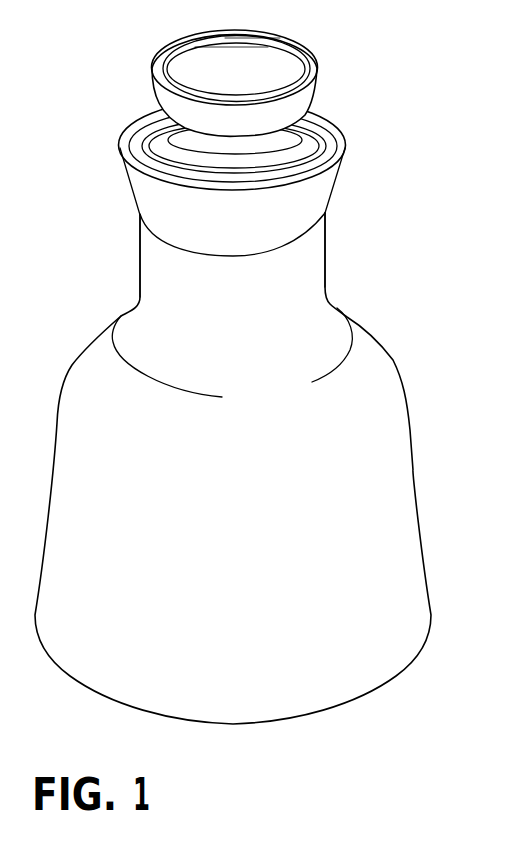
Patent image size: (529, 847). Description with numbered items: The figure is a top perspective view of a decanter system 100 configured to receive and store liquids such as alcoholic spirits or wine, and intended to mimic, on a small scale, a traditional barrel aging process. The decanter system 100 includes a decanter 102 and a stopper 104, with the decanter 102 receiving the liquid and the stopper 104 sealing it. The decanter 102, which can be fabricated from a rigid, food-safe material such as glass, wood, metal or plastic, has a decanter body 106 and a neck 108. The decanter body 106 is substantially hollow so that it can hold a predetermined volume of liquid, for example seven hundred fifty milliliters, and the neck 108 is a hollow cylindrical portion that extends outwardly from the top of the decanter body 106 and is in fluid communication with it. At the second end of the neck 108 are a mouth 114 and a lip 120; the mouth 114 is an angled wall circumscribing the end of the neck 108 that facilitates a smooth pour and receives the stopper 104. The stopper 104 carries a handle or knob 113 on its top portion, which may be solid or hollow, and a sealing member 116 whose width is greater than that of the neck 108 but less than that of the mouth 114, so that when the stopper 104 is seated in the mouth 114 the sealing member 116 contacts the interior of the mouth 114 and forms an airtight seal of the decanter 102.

The decanter system 100 is at (267, 362).
The decanter 102 is at (267, 468).
The stopper 104 is at (288, 55).
The decanter body 106 is at (393, 499).
The neck 108 is at (140, 278).
The knob 113 is at (155, 70).
The mouth 114 is at (333, 183).
The sealing member 116 is at (322, 118).
The lip 120 is at (342, 138).